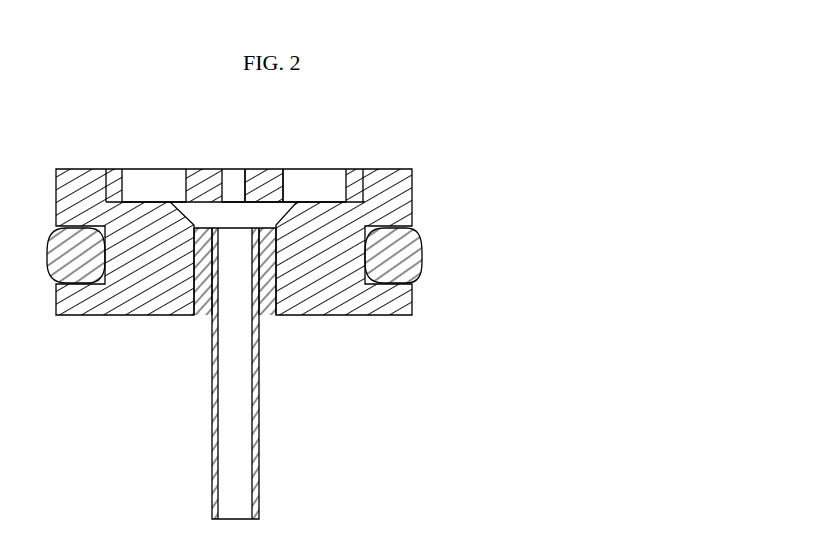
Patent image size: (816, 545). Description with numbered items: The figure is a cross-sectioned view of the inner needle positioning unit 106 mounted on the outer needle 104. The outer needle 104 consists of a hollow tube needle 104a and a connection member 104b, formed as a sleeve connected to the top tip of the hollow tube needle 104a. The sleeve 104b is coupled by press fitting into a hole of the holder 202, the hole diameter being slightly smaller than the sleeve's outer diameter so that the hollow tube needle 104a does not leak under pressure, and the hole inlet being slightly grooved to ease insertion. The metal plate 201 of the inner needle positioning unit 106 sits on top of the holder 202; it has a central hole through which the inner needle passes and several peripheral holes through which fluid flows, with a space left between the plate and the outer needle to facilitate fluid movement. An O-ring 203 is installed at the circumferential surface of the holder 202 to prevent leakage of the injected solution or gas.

The outer needle 104 is at (308, 373).
The hollow tube needle 104a is at (259, 395).
The connection member 104b is at (273, 303).
The inner needle positioning unit 106 is at (348, 162).
The metal plate 201 is at (262, 178).
The holder 202 is at (363, 206).
The O-ring 203 is at (400, 257).